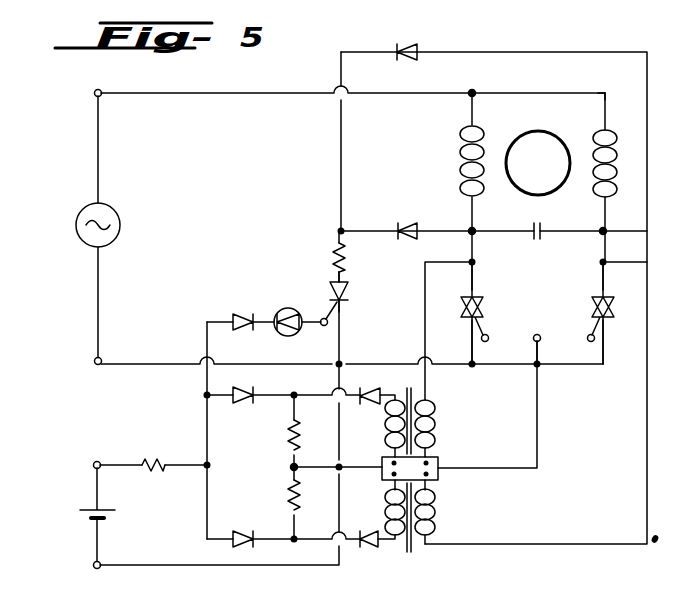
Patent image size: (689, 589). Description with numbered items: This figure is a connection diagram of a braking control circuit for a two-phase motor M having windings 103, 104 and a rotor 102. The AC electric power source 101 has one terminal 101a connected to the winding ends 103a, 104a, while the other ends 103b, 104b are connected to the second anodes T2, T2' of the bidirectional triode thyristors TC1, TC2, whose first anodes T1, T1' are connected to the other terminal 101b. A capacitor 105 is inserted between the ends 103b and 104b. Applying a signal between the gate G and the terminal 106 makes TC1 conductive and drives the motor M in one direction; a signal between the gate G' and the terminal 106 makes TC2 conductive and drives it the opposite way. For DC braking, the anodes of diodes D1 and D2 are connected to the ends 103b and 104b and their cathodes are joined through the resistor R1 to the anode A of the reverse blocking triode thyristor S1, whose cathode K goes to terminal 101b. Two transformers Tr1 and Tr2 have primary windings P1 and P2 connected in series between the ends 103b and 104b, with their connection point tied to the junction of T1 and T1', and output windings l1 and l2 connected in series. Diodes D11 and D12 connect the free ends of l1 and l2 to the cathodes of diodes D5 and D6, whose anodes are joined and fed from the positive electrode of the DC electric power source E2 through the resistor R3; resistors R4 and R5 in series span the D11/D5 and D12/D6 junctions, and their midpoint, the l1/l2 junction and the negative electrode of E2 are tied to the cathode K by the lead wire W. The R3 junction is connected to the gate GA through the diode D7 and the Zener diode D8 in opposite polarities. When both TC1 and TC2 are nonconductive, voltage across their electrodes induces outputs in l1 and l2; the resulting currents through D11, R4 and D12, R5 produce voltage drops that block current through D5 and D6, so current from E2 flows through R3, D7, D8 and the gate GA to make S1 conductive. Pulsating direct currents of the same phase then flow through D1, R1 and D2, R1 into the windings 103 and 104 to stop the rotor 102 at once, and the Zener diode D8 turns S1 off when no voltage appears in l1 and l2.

The terminal of power source 101a is at (95, 94).
The AC electric power source 101 is at (76, 226).
The terminal of power source 101b is at (94, 362).
The diode D2 is at (406, 62).
The end of winding 103a is at (488, 80).
The end of winding 104a is at (615, 81).
The rotor 102 is at (517, 139).
The two-phase motor M is at (578, 132).
The winding 103 is at (462, 167).
The winding 104 is at (608, 160).
The diode D1 is at (401, 223).
The end of winding 103b is at (450, 218).
The capacitor 105 is at (532, 222).
The end of winding 104b is at (624, 217).
The resistor R1 is at (335, 255).
The anode of thyristor A is at (348, 268).
The reverse blocking triode thyristor S1 is at (350, 292).
The cathode of thyristor K is at (342, 306).
The diode D7 is at (243, 315).
The Zener diode D8 is at (285, 308).
The gate of thyristor GA is at (323, 325).
The second anode T2 is at (454, 279).
The bidirectional triode thyristor TC1 is at (496, 302).
The first anode T1 is at (452, 342).
The gate G is at (494, 347).
The terminal 106 is at (537, 336).
The bidirectional triode thyristor TC2 is at (592, 308).
The second anode T2' is at (619, 279).
The gate G' is at (579, 347).
The first anode T1' is at (622, 342).
The diode D11 is at (362, 384).
The transformer Tr1 is at (410, 422).
The output winding l1 is at (385, 424).
The primary winding P1 is at (434, 428).
The output winding l2 is at (385, 514).
The primary winding P2 is at (434, 512).
The diode D12 is at (368, 548).
The transformer Tr2 is at (416, 535).
The diode D5 is at (245, 404).
The resistor R4 is at (278, 439).
The lead wire W is at (323, 458).
The resistor R5 is at (288, 505).
The diode D6 is at (245, 528).
The resistor R3 is at (152, 460).
The DC electric power source E2 is at (88, 516).